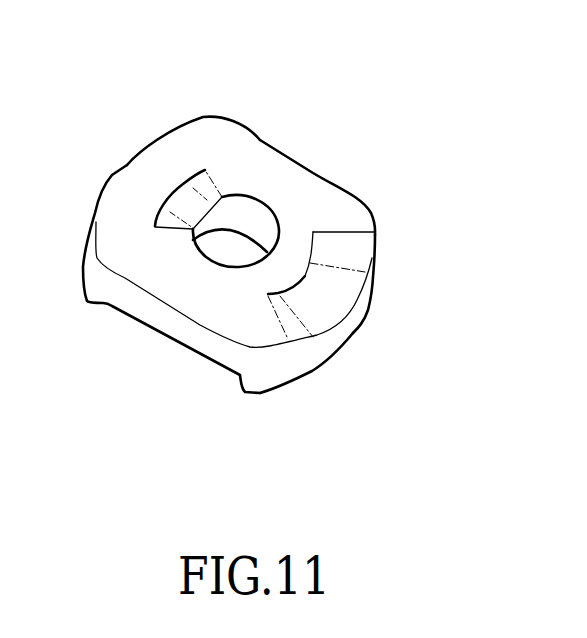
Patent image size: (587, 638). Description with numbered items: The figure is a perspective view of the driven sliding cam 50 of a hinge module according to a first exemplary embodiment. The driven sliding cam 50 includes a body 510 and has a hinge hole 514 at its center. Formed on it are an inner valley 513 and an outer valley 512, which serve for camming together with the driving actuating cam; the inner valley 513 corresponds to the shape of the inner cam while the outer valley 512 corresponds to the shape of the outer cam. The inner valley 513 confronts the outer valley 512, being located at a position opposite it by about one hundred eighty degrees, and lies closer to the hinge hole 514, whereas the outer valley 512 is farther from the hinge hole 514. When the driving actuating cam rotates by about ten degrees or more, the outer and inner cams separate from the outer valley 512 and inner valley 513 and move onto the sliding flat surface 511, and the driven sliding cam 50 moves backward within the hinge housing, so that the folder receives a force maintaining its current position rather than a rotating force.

The driven sliding cam 50 is at (393, 248).
The body 510 is at (273, 365).
The sliding flat surface 511 is at (310, 197).
The outer valley 512 is at (325, 310).
The inner valley 513 is at (187, 208).
The hinge hole 514 is at (238, 247).